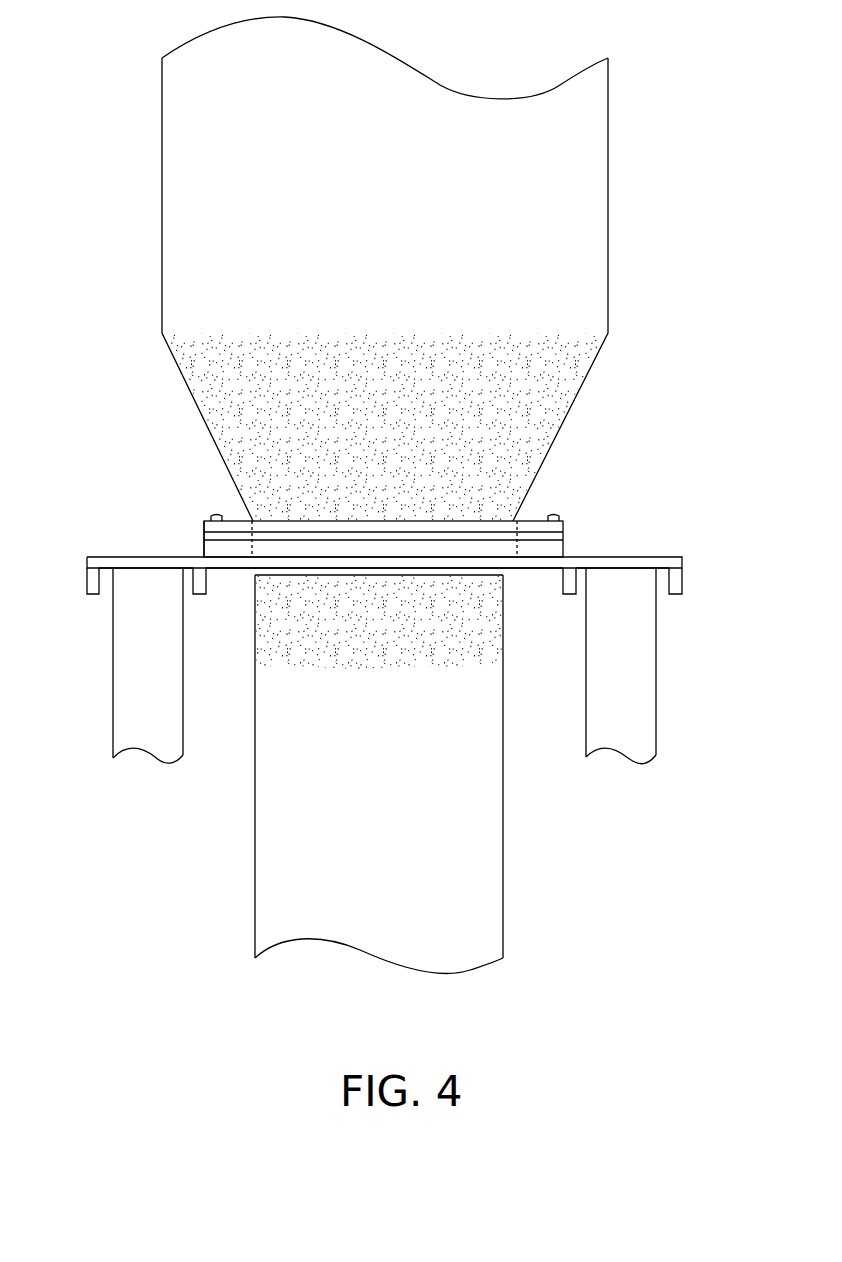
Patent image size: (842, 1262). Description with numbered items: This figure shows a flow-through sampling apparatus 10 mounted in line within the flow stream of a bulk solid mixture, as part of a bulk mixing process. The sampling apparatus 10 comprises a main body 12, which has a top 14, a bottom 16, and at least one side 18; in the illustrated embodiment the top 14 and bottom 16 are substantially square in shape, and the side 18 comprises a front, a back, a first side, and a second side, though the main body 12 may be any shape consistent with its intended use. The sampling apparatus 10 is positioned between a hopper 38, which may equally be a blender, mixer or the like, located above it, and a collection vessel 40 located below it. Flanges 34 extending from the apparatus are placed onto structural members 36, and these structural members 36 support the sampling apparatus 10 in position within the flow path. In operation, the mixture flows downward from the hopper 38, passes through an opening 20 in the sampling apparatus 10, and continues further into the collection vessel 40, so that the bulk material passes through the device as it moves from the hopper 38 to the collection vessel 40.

The flow-through sampling apparatus 10 is at (729, 528).
The main body 12 is at (562, 518).
The top 14 is at (533, 517).
The bottom 16 is at (563, 556).
The side 18 is at (204, 531).
The opening 20 is at (520, 548).
The flanges 34 is at (88, 556).
The structural members 36 is at (113, 708).
The hopper 38 is at (608, 187).
The collection vessel 40 is at (503, 870).